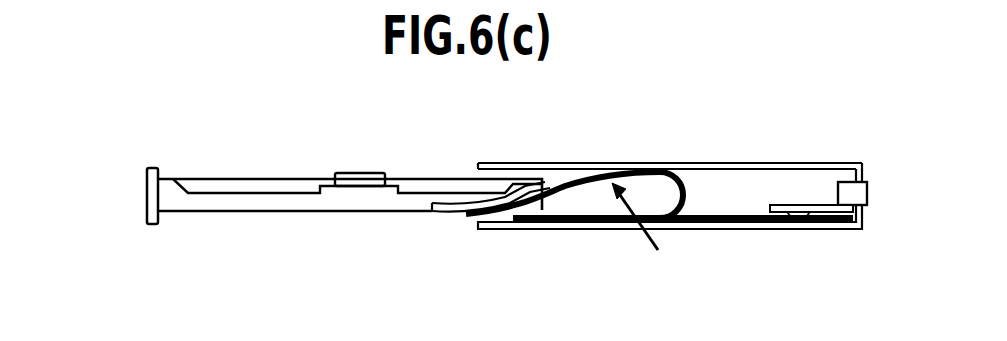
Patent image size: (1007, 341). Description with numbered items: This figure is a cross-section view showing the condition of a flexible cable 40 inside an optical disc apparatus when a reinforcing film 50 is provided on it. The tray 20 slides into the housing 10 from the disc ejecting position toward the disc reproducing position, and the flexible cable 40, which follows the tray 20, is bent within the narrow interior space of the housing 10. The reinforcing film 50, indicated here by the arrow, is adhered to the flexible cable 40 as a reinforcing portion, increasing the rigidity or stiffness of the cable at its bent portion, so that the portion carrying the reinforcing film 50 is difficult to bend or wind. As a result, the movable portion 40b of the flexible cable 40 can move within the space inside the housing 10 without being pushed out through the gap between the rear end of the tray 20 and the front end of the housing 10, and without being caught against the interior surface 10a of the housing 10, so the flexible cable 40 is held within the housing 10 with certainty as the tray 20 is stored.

The housing 10 is at (672, 166).
The interior surface of housing 10a is at (709, 176).
The tray 20 is at (258, 178).
The flexible cable 40 is at (729, 225).
The movable portion of flexible cable 40b is at (655, 168).
The reinforcing film 50 is at (576, 196).